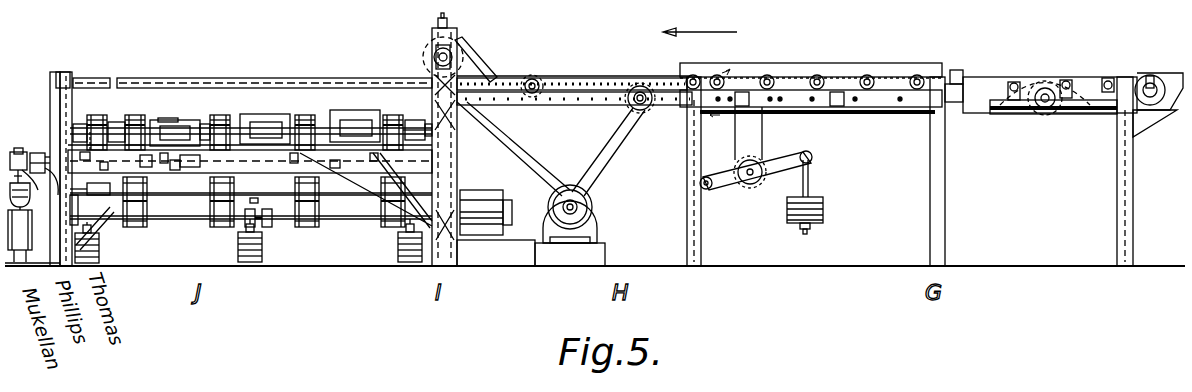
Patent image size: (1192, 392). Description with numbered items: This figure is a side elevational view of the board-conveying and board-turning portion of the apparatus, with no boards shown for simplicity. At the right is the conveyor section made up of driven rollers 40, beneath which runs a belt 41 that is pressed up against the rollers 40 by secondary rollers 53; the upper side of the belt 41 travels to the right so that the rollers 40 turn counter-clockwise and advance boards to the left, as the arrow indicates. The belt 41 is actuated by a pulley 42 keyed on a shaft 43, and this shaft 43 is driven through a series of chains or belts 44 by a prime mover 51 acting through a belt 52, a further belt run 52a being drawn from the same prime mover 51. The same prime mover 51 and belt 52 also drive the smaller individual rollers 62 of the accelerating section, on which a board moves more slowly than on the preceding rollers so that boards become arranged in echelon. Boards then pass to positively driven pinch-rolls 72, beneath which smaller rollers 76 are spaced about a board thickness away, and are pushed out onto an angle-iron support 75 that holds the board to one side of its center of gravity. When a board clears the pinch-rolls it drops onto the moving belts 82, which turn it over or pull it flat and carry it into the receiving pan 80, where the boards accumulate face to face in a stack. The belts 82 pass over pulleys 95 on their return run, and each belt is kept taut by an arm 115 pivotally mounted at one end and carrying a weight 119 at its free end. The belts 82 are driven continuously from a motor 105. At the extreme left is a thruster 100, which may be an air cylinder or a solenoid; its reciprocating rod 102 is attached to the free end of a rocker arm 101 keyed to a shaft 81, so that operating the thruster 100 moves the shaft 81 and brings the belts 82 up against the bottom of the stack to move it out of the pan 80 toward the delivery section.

The thruster 100 is at (55, 262).
The rocker arm 101 is at (18, 150).
The shaft 81 is at (36, 152).
The reciprocating rod 102 is at (40, 181).
The angle-iron support 75 is at (314, 78).
The pulley 95 is at (115, 114).
The receiving pan 80 is at (175, 119).
The smaller rollers 76 is at (425, 106).
The belts 82 is at (140, 208).
The arm 115 is at (245, 225).
The weight 119 is at (98, 248).
The pinch-roll 72 is at (468, 66).
The chains or belts 44 is at (553, 76).
The rollers 62 is at (526, 74).
The shaft 43 is at (640, 86).
The pulley 42 is at (638, 112).
The belt 52a is at (540, 148).
The belt 52 is at (618, 152).
The prime mover 51 is at (590, 210).
The motor 105 is at (480, 190).
The belt 41 is at (728, 80).
The driven rollers 40 is at (868, 74).
The secondary rollers 53 is at (850, 112).